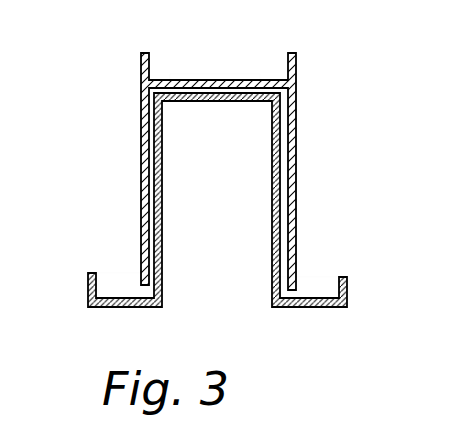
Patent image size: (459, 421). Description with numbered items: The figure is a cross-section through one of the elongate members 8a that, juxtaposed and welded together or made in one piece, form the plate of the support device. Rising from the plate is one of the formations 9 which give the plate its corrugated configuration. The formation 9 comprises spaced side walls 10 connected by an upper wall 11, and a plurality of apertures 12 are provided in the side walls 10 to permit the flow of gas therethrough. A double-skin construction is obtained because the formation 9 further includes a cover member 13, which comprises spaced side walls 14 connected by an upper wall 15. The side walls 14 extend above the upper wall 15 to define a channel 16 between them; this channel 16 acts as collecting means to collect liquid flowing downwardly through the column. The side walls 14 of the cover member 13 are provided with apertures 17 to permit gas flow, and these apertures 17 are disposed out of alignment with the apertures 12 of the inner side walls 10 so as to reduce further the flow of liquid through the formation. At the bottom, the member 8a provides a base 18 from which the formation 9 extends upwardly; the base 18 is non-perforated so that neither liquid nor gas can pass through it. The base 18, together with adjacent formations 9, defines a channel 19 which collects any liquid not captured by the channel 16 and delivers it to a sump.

The elongate member 8a is at (320, 308).
The formation 9 is at (254, 145).
The side wall 10 is at (213, 219).
The upper wall 11 is at (262, 93).
The aperture 12 is at (163, 163).
The cover member 13 is at (297, 93).
The side wall 14 is at (141, 194).
The upper wall 15 is at (186, 80).
The channel 16 is at (235, 74).
The aperture 17 is at (140, 148).
The base 18 is at (90, 289).
The channel 19 is at (115, 286).